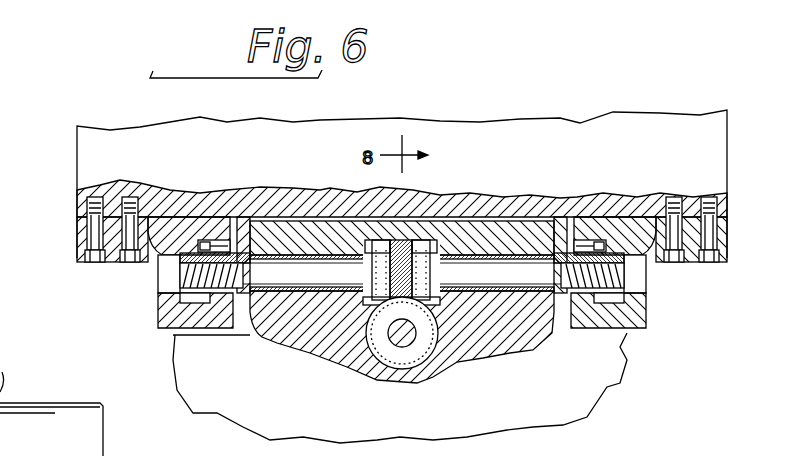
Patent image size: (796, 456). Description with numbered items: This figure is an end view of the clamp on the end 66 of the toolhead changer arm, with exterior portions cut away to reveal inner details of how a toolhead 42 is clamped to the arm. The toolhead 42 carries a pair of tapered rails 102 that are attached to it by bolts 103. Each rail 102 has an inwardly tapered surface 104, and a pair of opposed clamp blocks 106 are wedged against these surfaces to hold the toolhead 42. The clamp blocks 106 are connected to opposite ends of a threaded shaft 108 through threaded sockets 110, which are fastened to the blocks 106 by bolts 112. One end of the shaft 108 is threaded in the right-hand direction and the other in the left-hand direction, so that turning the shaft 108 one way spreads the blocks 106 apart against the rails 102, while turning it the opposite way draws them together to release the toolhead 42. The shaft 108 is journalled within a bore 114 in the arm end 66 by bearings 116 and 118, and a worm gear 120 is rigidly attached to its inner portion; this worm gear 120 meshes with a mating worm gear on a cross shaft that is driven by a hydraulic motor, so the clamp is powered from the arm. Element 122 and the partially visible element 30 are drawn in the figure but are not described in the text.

The toolhead 42 is at (578, 140).
The tapered rail 102 is at (77, 236).
The bolt 103 is at (132, 262).
The inwardly tapered surface 104 is at (173, 255).
The clamp block 106 is at (170, 313).
The threaded shaft 108 is at (333, 279).
The threaded socket 110 is at (222, 318).
The bolt 112 is at (203, 240).
The bore 114 is at (303, 262).
The bearing 116 is at (374, 245).
The bearing 118 is at (430, 248).
The worm gear 120 is at (402, 247).
The bearing 122 is at (417, 360).
The arm end 66 is at (540, 415).
The frame member 30 is at (51, 401).